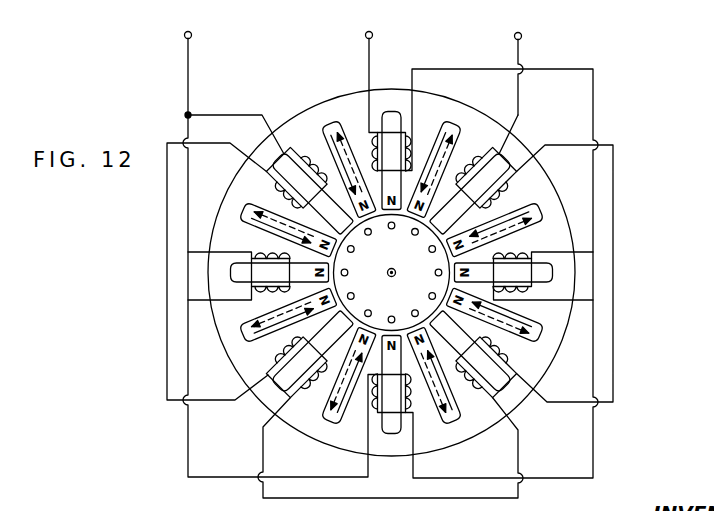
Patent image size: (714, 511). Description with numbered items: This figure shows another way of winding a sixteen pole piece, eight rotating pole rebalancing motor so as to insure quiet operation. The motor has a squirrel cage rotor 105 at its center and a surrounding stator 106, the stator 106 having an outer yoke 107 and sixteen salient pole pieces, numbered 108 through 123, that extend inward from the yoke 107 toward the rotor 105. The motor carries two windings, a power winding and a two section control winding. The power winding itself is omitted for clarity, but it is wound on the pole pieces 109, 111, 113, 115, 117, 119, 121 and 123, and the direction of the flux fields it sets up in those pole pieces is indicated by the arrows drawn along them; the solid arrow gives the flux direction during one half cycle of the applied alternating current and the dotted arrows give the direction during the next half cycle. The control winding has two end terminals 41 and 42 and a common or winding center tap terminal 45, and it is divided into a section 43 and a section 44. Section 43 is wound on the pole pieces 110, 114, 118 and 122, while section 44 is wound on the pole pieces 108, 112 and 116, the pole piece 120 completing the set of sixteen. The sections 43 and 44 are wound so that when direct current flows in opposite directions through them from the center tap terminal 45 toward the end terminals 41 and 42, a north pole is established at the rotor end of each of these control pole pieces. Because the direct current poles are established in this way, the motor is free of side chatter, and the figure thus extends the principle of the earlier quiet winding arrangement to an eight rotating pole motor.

The end terminal 41 is at (517, 32).
The end terminal 42 is at (368, 31).
The common or winding center tap terminal 45 is at (185, 32).
The control winding section 43 is at (470, 173).
The control winding section 44 is at (380, 142).
The squirrel cage rotor 105 is at (406, 255).
The stator 106 is at (448, 97).
The yoke 107 is at (507, 138).
The pole piece 108 is at (390, 103).
The pole piece 109 is at (445, 138).
The pole piece 110 is at (505, 160).
The pole piece 111 is at (530, 215).
The pole piece 112 is at (540, 275).
The pole piece 113 is at (545, 340).
The pole piece 114 is at (497, 383).
The pole piece 115 is at (450, 410).
The pole piece 116 is at (393, 427).
The pole piece 117 is at (338, 400).
The pole piece 118 is at (288, 381).
The pole piece 119 is at (258, 337).
The pole piece 120 is at (240, 273).
The pole piece 121 is at (258, 216).
The pole piece 122 is at (272, 150).
The pole piece 123 is at (335, 128).